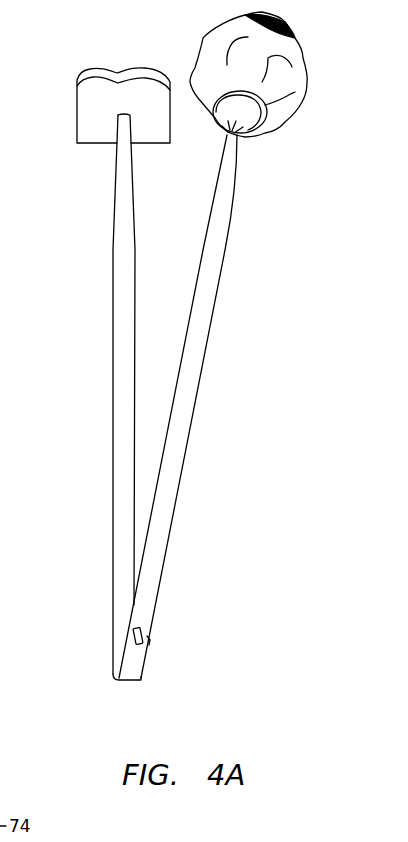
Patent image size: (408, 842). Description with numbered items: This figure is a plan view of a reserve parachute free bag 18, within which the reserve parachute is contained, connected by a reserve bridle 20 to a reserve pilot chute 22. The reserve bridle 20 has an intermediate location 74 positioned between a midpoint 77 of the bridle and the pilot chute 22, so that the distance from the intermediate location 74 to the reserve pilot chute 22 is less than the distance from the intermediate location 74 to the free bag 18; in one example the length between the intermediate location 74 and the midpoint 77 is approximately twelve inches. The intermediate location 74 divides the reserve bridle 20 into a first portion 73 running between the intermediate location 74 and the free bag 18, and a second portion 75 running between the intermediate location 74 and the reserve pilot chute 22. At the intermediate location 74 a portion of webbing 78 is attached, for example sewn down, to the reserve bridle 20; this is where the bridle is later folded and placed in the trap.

The free bag 18 is at (120, 72).
The reserve bridle 20 is at (93, 339).
The reserve pilot chute 22 is at (296, 47).
The first portion 73 is at (113, 376).
The intermediate location 74 is at (149, 638).
The second portion 75 is at (223, 263).
The midpoint 77 is at (132, 681).
The webbing 78 is at (138, 627).